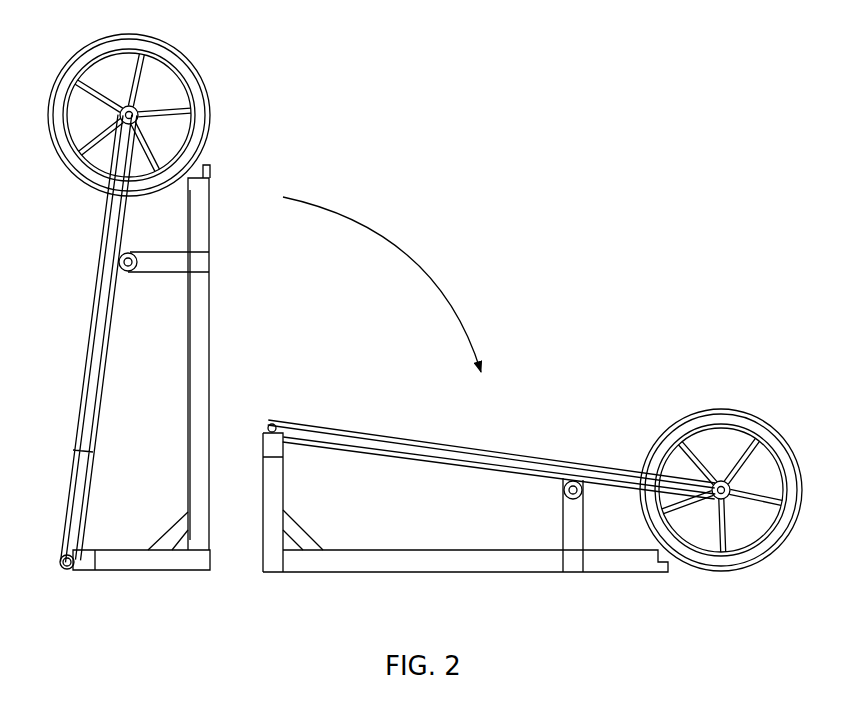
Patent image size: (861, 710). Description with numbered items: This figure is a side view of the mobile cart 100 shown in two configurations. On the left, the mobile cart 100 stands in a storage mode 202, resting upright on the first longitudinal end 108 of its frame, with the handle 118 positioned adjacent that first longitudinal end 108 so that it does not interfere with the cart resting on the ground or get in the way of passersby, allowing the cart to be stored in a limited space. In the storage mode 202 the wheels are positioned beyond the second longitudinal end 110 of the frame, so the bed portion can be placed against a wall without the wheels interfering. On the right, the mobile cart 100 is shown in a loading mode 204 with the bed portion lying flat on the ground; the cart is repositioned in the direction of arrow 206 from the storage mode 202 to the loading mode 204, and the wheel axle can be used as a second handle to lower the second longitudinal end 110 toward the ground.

The mobile cart 100 is at (740, 101).
The first longitudinal end 108 is at (143, 572).
The second longitudinal end 110 is at (212, 166).
The handle 118 is at (66, 572).
The storage mode 202 is at (252, 96).
The loading mode 204 is at (592, 398).
The arrow 206 is at (378, 228).